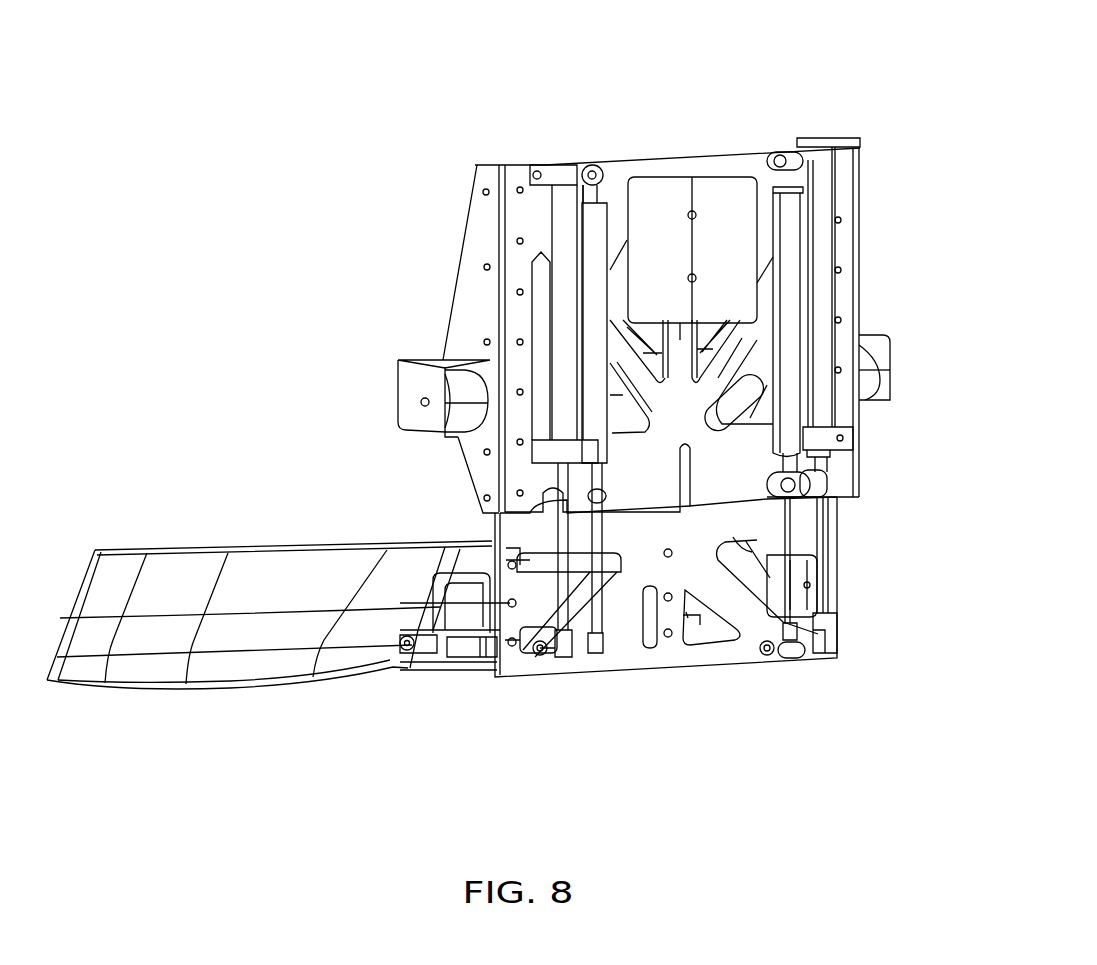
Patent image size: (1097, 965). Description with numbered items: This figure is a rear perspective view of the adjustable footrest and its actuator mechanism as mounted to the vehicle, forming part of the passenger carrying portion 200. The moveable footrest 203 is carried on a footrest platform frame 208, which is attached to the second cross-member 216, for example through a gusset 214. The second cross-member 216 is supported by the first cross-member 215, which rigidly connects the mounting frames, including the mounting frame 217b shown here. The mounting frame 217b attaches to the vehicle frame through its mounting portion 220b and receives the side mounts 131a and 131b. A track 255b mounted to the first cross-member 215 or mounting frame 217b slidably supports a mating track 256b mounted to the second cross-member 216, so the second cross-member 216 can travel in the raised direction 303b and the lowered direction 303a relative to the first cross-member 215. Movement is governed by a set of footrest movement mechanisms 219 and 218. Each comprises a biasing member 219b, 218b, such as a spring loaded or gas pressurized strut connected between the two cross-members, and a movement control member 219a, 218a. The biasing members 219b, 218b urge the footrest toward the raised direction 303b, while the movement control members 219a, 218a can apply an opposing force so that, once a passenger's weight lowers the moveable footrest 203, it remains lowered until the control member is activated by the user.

The passenger carrying portion 200 is at (719, 756).
The moveable footrest 203 is at (273, 580).
The footrest platform frame 208 is at (441, 672).
The gusset 214 is at (755, 627).
The first cross-member 215 is at (677, 340).
The second cross-member 216 is at (645, 547).
The mounting frame 217b is at (463, 318).
The footrest movement mechanism 218 is at (788, 73).
The movement control member 218a is at (827, 197).
The biasing member 218b is at (783, 207).
The footrest movement mechanism 219 is at (390, 160).
The movement control member 219a is at (563, 305).
The biasing member 219b is at (593, 242).
The mounting portion 220b is at (420, 400).
The side mount 131a is at (870, 353).
The side mount 131b is at (460, 400).
The track 255b is at (492, 660).
The track 256b is at (485, 470).
The lowered direction 303a is at (735, 538).
The raised direction 303b is at (733, 405).